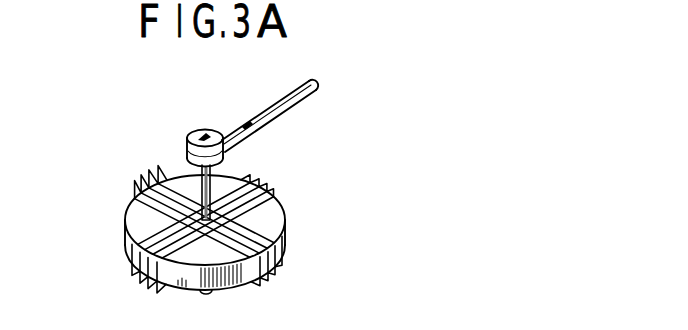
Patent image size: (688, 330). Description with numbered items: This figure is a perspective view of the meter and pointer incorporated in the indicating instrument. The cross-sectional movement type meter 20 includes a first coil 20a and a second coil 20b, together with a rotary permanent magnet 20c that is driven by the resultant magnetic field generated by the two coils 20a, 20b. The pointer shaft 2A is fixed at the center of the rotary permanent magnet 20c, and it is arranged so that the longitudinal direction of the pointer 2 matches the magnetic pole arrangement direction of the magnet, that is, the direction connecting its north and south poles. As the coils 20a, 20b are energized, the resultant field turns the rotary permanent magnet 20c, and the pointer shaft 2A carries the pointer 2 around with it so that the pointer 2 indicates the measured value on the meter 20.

The pointer 2 is at (272, 110).
The pointer shaft 2A is at (230, 168).
The cross-sectional movement type meter 20 is at (293, 264).
The first coil 20a is at (160, 198).
The second coil 20b is at (153, 238).
The rotary permanent magnet 20c is at (277, 210).